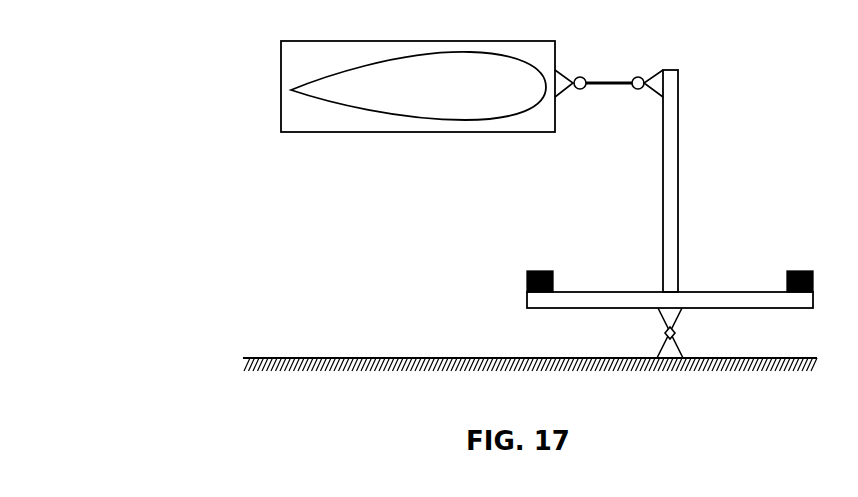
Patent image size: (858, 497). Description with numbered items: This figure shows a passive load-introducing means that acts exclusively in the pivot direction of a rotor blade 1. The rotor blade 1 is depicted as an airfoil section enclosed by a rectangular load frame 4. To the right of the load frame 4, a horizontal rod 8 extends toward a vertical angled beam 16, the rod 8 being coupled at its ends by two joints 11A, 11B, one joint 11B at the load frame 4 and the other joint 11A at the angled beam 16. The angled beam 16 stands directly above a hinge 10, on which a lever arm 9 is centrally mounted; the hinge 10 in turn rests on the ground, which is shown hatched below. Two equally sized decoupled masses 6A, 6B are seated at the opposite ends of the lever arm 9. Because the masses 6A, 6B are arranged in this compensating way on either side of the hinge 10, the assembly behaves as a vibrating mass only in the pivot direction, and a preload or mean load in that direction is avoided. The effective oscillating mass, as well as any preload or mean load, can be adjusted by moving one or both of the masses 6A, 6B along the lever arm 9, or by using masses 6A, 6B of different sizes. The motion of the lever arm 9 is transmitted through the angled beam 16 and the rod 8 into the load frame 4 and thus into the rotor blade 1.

The rotor blade 1 is at (488, 53).
The load frame 4 is at (282, 75).
The decoupled mass 6A is at (542, 270).
The decoupled mass 6B is at (800, 270).
The rod 8 is at (607, 87).
The lever arm 9 is at (593, 292).
The hinge 10 is at (676, 334).
The joint 11A is at (633, 78).
The joint 11B is at (583, 90).
The angled beam 16 is at (680, 195).